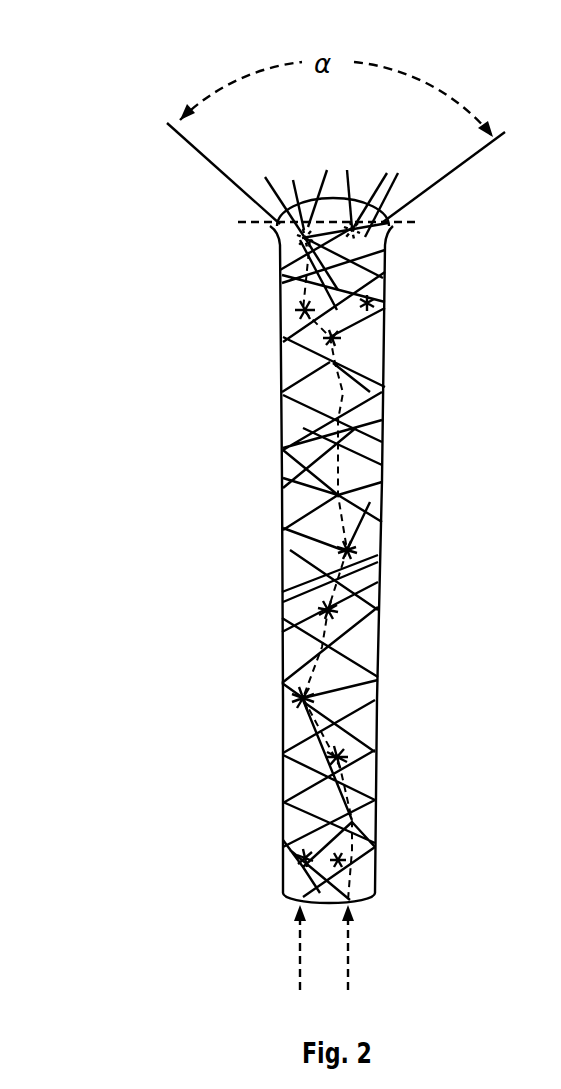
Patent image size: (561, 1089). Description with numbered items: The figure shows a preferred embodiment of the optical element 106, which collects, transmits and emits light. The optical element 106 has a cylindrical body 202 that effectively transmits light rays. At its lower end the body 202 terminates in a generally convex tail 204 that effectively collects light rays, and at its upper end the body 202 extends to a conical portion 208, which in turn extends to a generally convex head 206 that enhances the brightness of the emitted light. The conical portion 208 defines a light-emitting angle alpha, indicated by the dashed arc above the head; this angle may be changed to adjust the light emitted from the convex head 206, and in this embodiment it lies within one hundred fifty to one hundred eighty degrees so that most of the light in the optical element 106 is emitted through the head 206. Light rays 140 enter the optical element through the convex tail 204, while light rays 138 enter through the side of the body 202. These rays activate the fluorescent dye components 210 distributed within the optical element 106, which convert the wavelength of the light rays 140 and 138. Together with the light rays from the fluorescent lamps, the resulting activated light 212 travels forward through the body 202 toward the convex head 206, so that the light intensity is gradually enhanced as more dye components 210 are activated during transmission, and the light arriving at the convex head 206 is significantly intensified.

The optical element 106 is at (120, 171).
The light rays 138 is at (328, 504).
The light rays 140 is at (300, 970).
The body 202 is at (382, 465).
The convex tail 204 is at (363, 895).
The convex head 206 is at (333, 199).
The conical portion 208 is at (388, 232).
The fluorescent dye components 210 is at (300, 600).
The activated light 212 is at (357, 398).